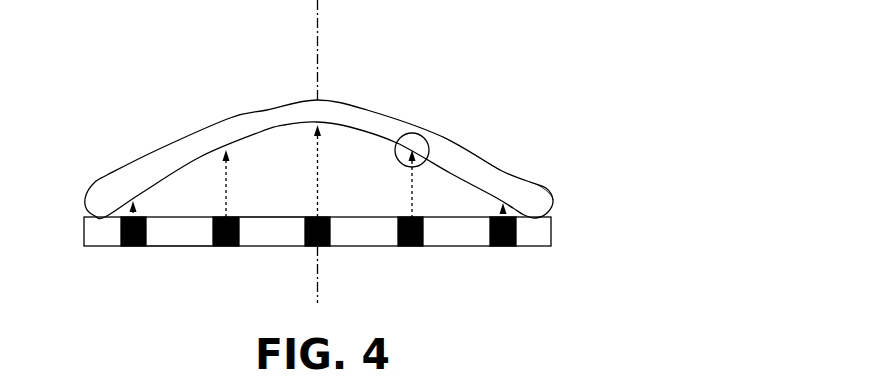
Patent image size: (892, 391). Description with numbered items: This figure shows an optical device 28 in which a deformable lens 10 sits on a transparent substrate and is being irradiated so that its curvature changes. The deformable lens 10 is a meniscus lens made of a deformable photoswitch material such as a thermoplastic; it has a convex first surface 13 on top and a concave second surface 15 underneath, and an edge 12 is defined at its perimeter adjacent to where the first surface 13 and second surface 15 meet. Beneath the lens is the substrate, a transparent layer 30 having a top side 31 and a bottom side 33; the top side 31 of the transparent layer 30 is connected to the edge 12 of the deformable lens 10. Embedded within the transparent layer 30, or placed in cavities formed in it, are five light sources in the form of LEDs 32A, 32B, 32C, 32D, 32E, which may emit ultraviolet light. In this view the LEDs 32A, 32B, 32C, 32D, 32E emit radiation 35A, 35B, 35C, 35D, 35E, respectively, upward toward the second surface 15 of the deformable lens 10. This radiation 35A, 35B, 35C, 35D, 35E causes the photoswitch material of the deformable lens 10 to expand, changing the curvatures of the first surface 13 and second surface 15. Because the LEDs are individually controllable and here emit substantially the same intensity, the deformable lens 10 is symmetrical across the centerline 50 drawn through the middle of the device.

The deformable lens 10 is at (367, 111).
The edge 12 is at (530, 187).
The first surface 13 is at (443, 137).
The second surface 15 is at (408, 133).
The optical device 28 is at (101, 123).
The transparent layer 30 is at (88, 231).
The top side 31 is at (262, 216).
The LED 32A is at (135, 247).
The LED 32B is at (227, 247).
The LED 32C is at (328, 247).
The LED 32D is at (410, 247).
The LED 32E is at (503, 247).
The bottom side 33 is at (172, 247).
The radiation 35A is at (135, 214).
The radiation 35B is at (226, 182).
The radiation 35C is at (318, 165).
The radiation 35D is at (412, 195).
The radiation 35E is at (506, 213).
The centerline 50 is at (318, 18).